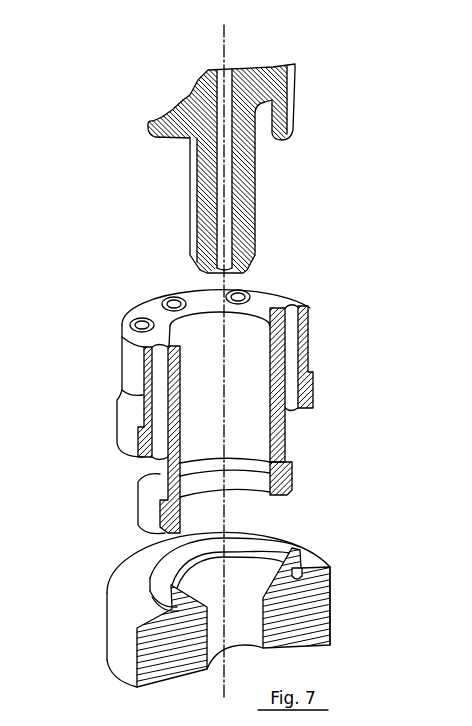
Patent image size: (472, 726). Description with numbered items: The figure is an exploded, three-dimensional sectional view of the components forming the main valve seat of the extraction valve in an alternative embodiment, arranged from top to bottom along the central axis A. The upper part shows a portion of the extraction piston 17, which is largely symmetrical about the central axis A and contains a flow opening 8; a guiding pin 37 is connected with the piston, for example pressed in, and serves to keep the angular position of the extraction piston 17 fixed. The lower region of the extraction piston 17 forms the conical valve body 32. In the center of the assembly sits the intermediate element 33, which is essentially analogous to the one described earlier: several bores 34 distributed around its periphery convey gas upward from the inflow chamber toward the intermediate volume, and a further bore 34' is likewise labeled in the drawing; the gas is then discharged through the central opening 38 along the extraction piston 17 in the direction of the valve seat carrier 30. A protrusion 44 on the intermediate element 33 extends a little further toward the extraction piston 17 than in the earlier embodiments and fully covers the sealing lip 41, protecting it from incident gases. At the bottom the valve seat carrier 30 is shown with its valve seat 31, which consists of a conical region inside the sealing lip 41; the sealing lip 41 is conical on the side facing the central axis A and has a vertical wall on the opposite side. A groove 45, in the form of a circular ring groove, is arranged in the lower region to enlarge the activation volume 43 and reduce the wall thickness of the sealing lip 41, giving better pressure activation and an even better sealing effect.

The central axis A is at (228, 50).
The flow opening 8 is at (217, 90).
The extraction piston 17 is at (254, 148).
The guiding pin 37 is at (280, 97).
The valve body 32 is at (253, 258).
The intermediate element 33 is at (225, 385).
The bores 34 is at (148, 336).
The annular slot in sleeve 34' is at (274, 375).
The central opening 38 is at (258, 438).
The protrusion 44 is at (284, 470).
The valve seat carrier 30 is at (224, 590).
The valve seat 31 is at (263, 555).
The sealing lip 41 is at (303, 567).
The groove 45 is at (172, 608).
The activation volume 43 is at (165, 604).